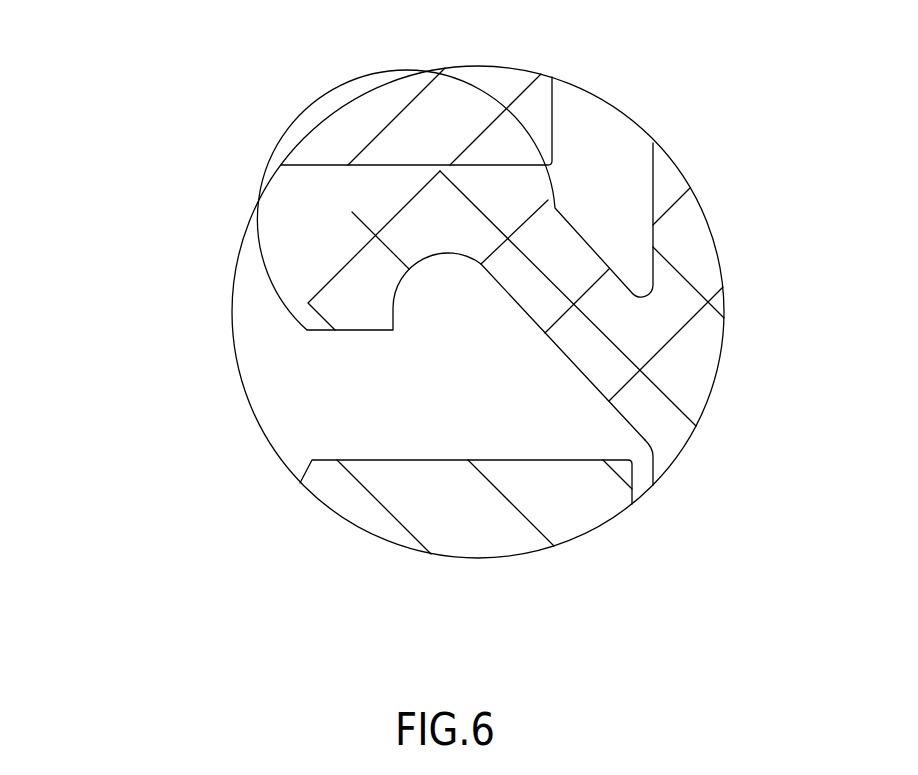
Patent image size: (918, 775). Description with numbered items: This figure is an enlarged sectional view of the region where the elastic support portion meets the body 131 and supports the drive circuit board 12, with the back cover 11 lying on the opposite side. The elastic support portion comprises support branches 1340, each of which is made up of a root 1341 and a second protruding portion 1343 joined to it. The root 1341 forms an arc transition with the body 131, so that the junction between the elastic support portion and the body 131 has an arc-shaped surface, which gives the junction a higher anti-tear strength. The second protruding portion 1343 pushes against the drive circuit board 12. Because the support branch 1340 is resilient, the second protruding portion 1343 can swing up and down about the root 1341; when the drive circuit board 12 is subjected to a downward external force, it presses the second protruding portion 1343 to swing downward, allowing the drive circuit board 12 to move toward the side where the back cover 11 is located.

The drive circuit board 12 is at (452, 110).
The back cover 11 is at (460, 525).
The body 131 is at (690, 344).
The support branch 1340 is at (379, 255).
The second protruding portion 1343 is at (428, 228).
The root 1341 is at (617, 346).